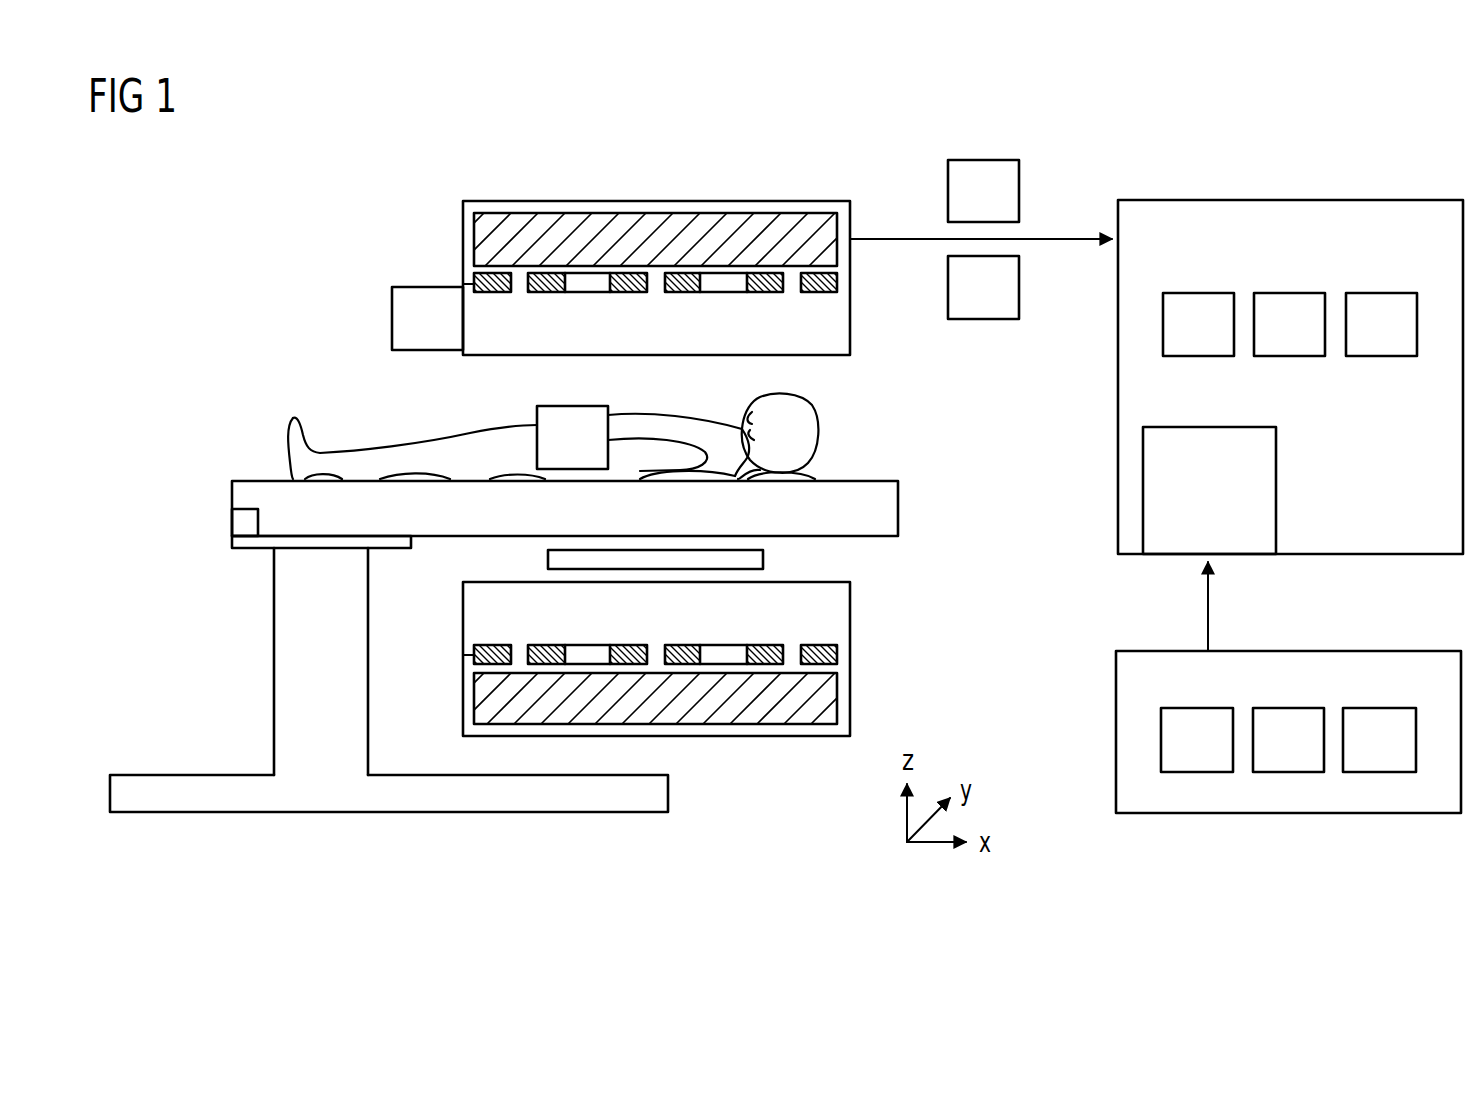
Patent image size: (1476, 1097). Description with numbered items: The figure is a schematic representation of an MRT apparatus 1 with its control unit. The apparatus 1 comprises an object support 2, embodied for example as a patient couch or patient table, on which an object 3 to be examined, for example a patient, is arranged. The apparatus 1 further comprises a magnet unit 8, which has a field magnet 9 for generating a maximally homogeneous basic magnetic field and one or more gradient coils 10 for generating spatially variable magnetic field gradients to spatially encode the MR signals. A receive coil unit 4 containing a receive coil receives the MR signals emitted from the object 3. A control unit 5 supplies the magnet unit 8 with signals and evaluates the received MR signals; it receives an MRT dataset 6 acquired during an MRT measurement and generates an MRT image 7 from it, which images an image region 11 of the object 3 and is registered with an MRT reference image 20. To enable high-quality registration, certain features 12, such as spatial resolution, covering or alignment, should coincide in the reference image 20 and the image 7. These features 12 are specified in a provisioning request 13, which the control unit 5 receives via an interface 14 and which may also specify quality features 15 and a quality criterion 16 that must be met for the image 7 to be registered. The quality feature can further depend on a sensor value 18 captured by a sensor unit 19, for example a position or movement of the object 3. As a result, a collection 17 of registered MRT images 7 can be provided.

The MRT apparatus 1 is at (274, 250).
The object support 2 is at (880, 509).
The object 3 is at (367, 463).
The receive coil unit 4 is at (752, 560).
The control unit 5 is at (1133, 251).
The MRT dataset 6 is at (974, 209).
The MRT image 7 is at (541, 543).
The magnet unit 8 is at (826, 327).
The field magnet 9 is at (651, 230).
The gradient coils 10 is at (758, 284).
The image region 11 is at (558, 455).
The features 12 is at (1183, 757).
The provisioning request 13 is at (1128, 699).
The interface 14 is at (1195, 506).
The quality features 15 is at (1274, 757).
The quality criterion 16 is at (1366, 757).
The collection 17 is at (1367, 341).
The sensor value 18 is at (969, 306).
The sensor unit 19 is at (413, 338).
The MRT reference image 20 is at (1275, 341).